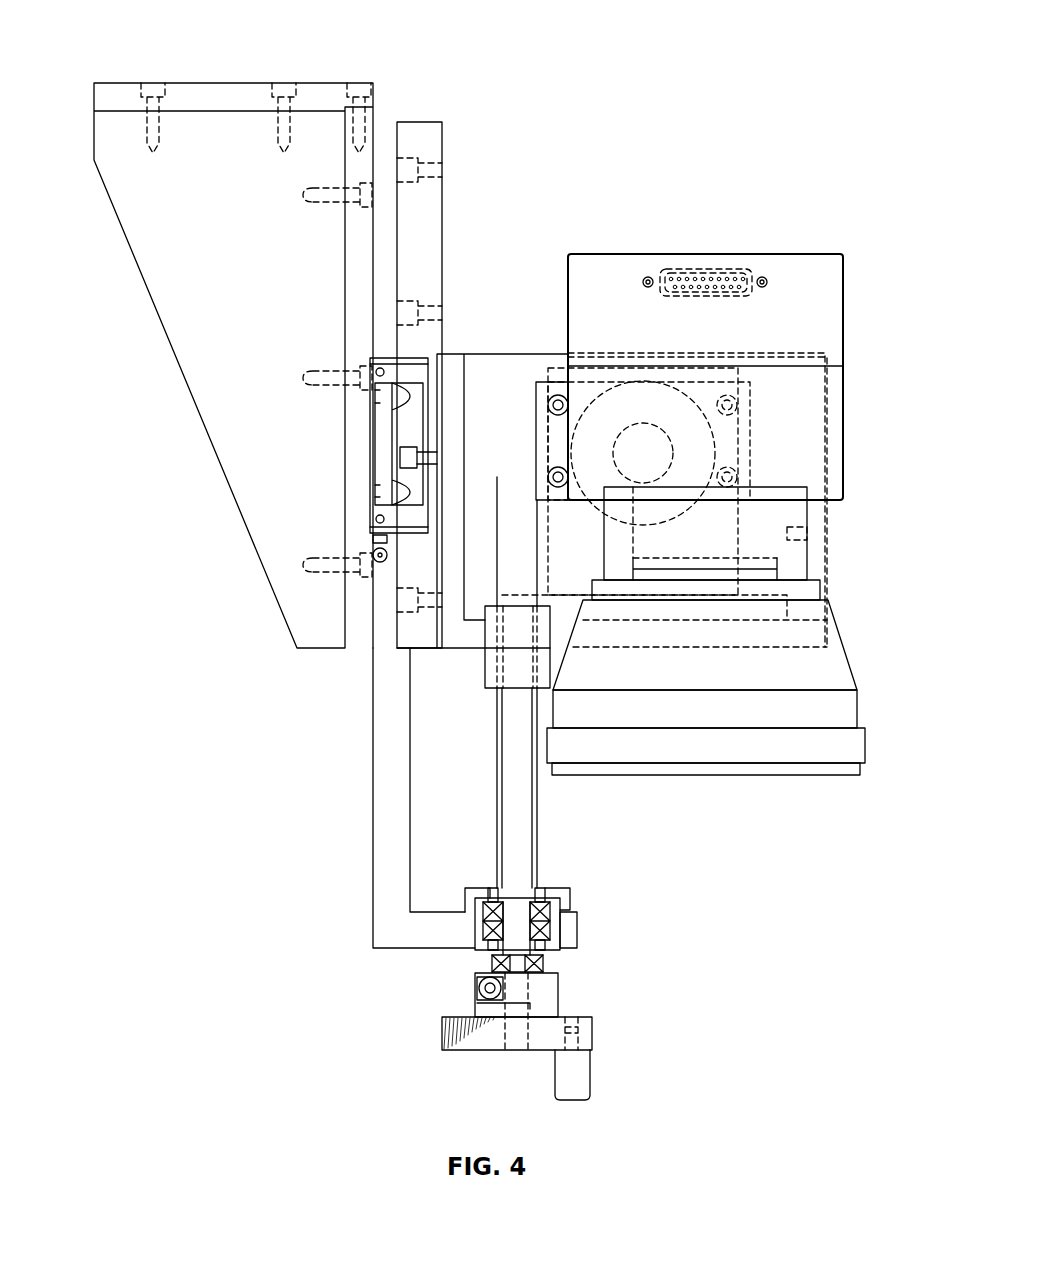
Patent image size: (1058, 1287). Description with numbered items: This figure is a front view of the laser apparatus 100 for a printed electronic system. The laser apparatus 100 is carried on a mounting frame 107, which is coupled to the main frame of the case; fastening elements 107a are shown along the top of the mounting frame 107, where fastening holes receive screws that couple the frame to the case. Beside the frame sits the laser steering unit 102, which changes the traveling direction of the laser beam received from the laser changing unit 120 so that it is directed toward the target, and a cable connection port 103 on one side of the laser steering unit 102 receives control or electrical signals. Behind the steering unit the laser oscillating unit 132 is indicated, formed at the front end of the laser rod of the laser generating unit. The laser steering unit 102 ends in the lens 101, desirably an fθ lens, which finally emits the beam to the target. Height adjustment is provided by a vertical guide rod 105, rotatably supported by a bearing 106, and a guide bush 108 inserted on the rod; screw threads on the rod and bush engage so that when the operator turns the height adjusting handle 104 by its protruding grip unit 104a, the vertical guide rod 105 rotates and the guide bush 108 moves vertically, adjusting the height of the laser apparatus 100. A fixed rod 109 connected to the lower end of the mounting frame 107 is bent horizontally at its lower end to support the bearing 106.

The laser apparatus 100 is at (700, 97).
The lens 101 is at (772, 758).
The laser steering unit 102 is at (814, 256).
The cable connection port 103 is at (708, 262).
The height adjusting handle 104 is at (448, 1033).
The grip unit 104a is at (580, 1077).
The vertical guide rod 105 is at (532, 843).
The bearing 106 is at (547, 910).
The mounting frame 107 is at (222, 331).
The fastening bolts 107a is at (280, 104).
The guide bush 108 is at (490, 682).
The fixed rod 109 is at (377, 798).
The laser changing unit 120 is at (715, 440).
The laser oscillating unit 132 is at (672, 442).